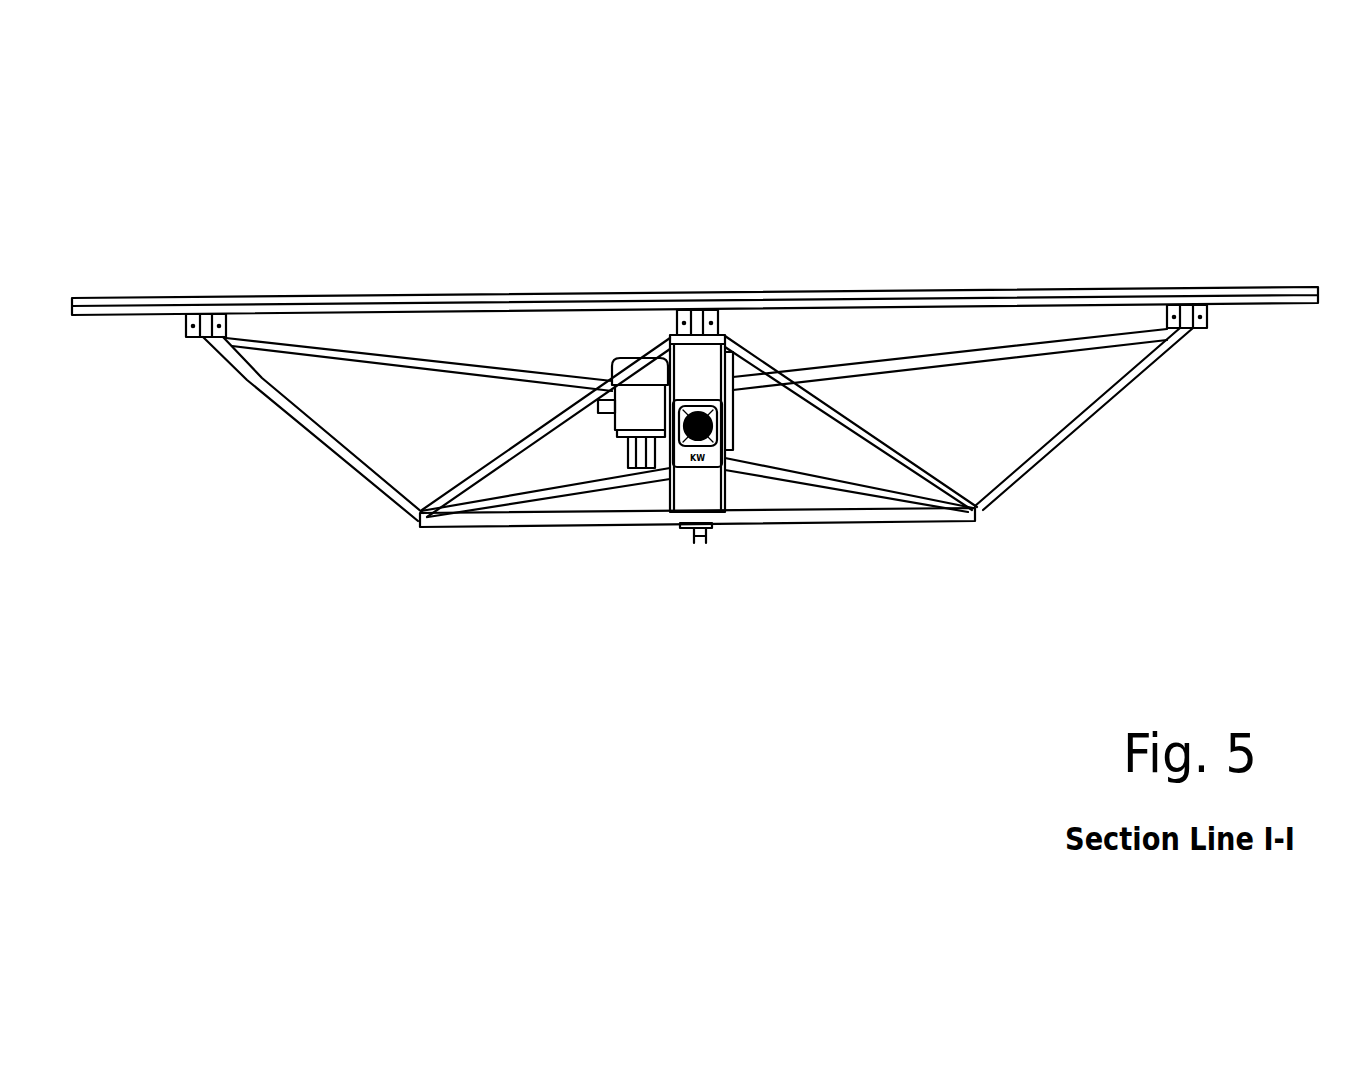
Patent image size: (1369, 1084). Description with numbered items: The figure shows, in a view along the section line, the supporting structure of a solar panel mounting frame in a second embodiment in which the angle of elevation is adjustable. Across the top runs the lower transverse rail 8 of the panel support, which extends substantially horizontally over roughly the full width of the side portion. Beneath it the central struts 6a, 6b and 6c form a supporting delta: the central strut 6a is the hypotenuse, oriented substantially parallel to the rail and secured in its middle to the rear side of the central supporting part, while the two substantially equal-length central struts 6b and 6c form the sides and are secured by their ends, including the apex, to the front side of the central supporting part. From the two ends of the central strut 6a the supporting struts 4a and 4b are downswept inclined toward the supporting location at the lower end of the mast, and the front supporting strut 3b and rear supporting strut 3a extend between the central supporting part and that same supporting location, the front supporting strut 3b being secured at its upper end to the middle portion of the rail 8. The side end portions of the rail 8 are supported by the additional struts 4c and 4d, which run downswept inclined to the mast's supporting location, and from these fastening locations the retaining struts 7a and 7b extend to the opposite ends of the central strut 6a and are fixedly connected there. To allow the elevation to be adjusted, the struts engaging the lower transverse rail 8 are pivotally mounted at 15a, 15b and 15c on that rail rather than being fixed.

The lower transverse rail 8 is at (1253, 298).
The pivot mounting 15a is at (230, 323).
The pivot mounting 15b is at (675, 318).
The pivot mounting 15c is at (1165, 317).
The rear supporting strut 3a is at (707, 535).
The front supporting strut 3b is at (700, 320).
The supporting strut 4a is at (552, 487).
The supporting strut 4b is at (878, 490).
The additional strut 4c is at (382, 367).
The additional strut 4d is at (1080, 345).
The central strut 6a is at (643, 514).
The central strut 6b is at (481, 470).
The central strut 6c is at (873, 428).
The retaining strut 7a is at (245, 380).
The retaining strut 7b is at (1010, 480).